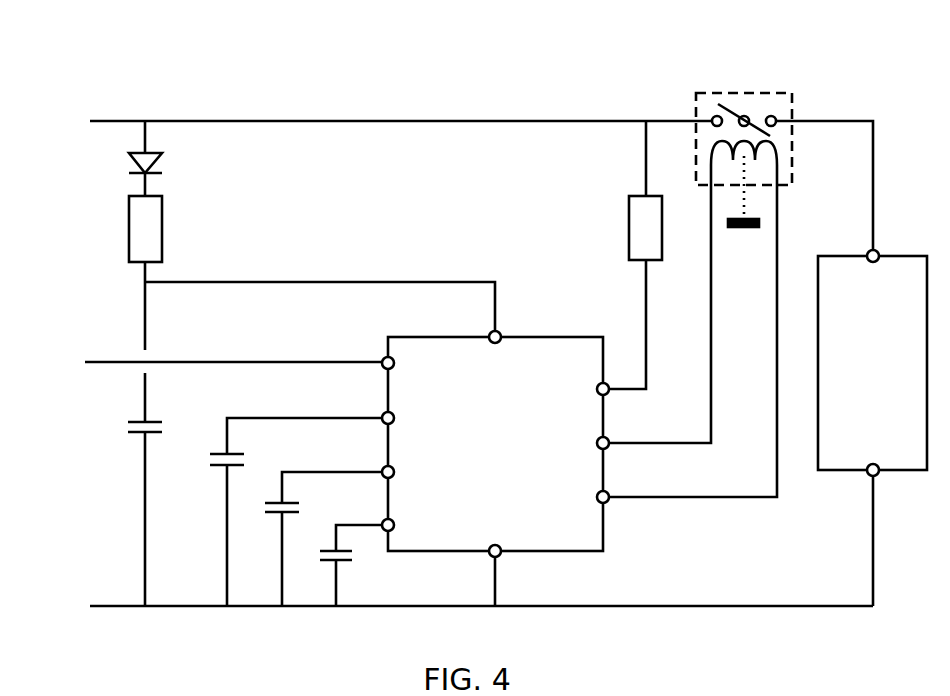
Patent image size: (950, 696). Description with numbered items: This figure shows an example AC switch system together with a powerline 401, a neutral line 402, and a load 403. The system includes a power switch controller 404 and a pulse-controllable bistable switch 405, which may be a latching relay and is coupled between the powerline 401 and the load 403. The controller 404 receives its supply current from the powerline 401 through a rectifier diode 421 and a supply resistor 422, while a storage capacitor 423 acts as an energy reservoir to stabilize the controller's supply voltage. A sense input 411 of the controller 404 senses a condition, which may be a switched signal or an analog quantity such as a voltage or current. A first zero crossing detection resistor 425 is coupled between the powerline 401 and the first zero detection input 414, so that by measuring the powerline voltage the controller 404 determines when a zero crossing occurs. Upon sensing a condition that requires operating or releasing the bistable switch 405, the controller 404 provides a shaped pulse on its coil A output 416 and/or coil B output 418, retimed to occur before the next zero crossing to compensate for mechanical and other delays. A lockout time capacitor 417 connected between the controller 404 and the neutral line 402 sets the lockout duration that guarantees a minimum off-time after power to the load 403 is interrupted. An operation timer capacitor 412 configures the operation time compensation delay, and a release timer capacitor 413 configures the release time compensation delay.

The powerline 401 is at (172, 118).
The neutral line 402 is at (112, 617).
The load 403 is at (872, 428).
The power switch controller 404 is at (504, 468).
The pulse-controllable bistable switch 405 is at (700, 88).
The sense input 411 is at (220, 358).
The operation timer capacitor 412 is at (270, 520).
The release timer capacitor 413 is at (325, 567).
The first zero detection input 414 is at (652, 374).
The coil A output 416 is at (682, 450).
The lockout time capacitor 417 is at (210, 471).
The coil B output 418 is at (682, 504).
The rectifier diode 421 is at (122, 183).
The supply resistor 422 is at (125, 268).
The storage capacitor 423 is at (130, 447).
The first zero crossing detection resistor 425 is at (637, 268).